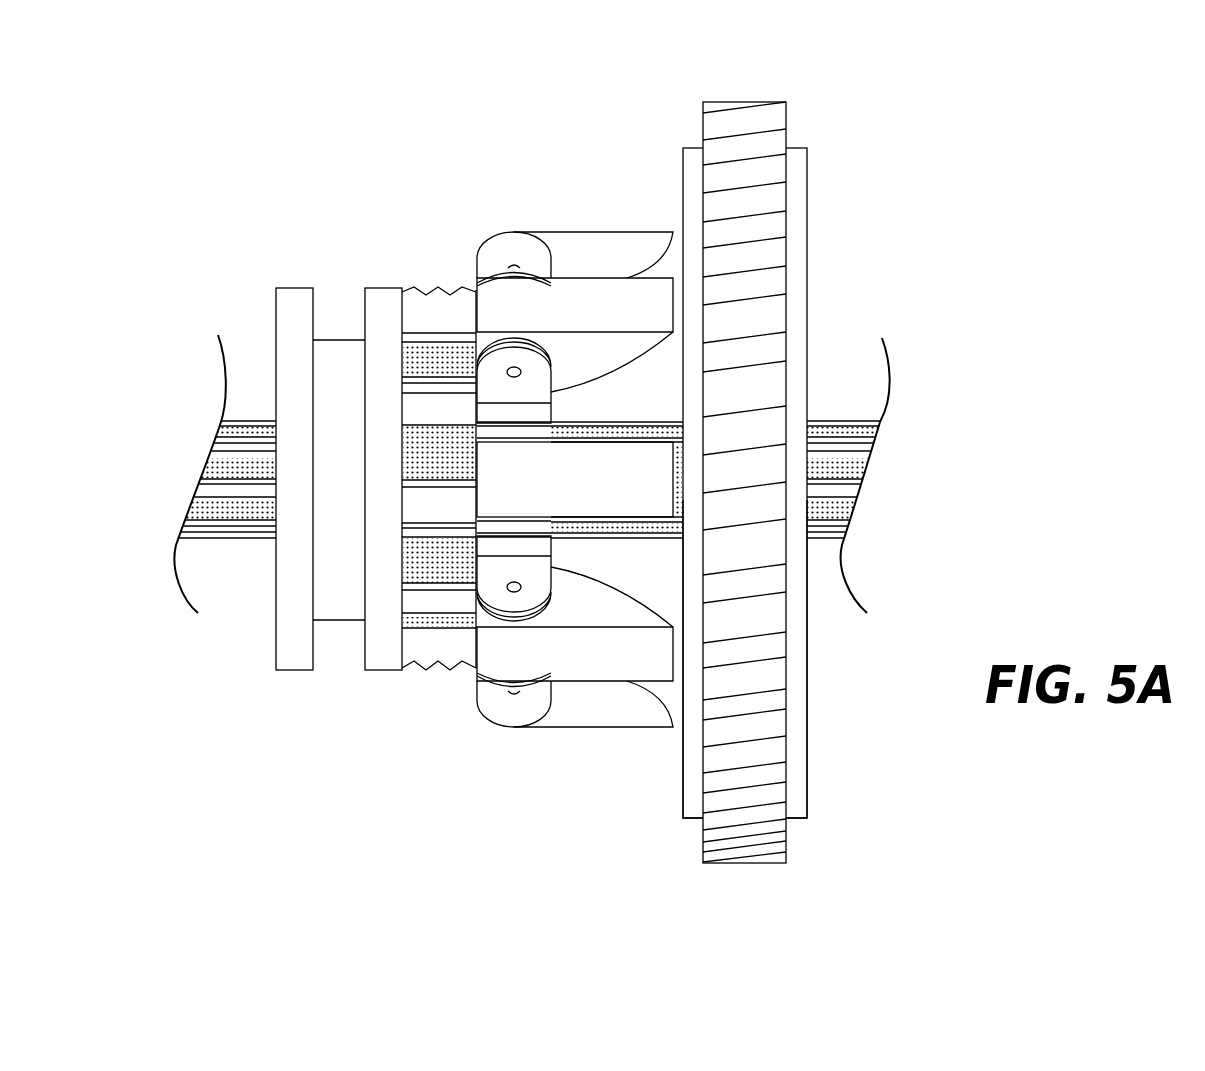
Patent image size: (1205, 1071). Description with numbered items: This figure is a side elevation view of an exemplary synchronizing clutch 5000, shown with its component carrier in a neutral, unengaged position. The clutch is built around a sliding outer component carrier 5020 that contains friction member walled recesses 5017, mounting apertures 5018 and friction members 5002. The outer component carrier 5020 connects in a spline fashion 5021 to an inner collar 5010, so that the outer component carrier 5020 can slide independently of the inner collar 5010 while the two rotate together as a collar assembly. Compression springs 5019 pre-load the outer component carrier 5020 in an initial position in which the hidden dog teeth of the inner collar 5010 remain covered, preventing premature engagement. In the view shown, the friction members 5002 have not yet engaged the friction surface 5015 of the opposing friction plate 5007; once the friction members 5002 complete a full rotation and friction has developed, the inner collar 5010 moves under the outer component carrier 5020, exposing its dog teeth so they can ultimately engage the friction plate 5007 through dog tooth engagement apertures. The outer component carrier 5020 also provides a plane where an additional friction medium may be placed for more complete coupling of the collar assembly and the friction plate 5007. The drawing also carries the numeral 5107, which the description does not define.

The synchronizing clutch 5000 is at (277, 138).
The friction members 5002 is at (587, 232).
The friction plate 5007 is at (683, 172).
The inner collar 5010 is at (382, 672).
The friction surface 5015 is at (680, 795).
The friction member walled recesses 5017 is at (498, 348).
The mounting apertures 5018 is at (525, 368).
The compression springs 5019 is at (432, 672).
The outer component carrier 5020 is at (555, 410).
The spline 5021 is at (440, 412).
The worm gear 5107 is at (748, 97).